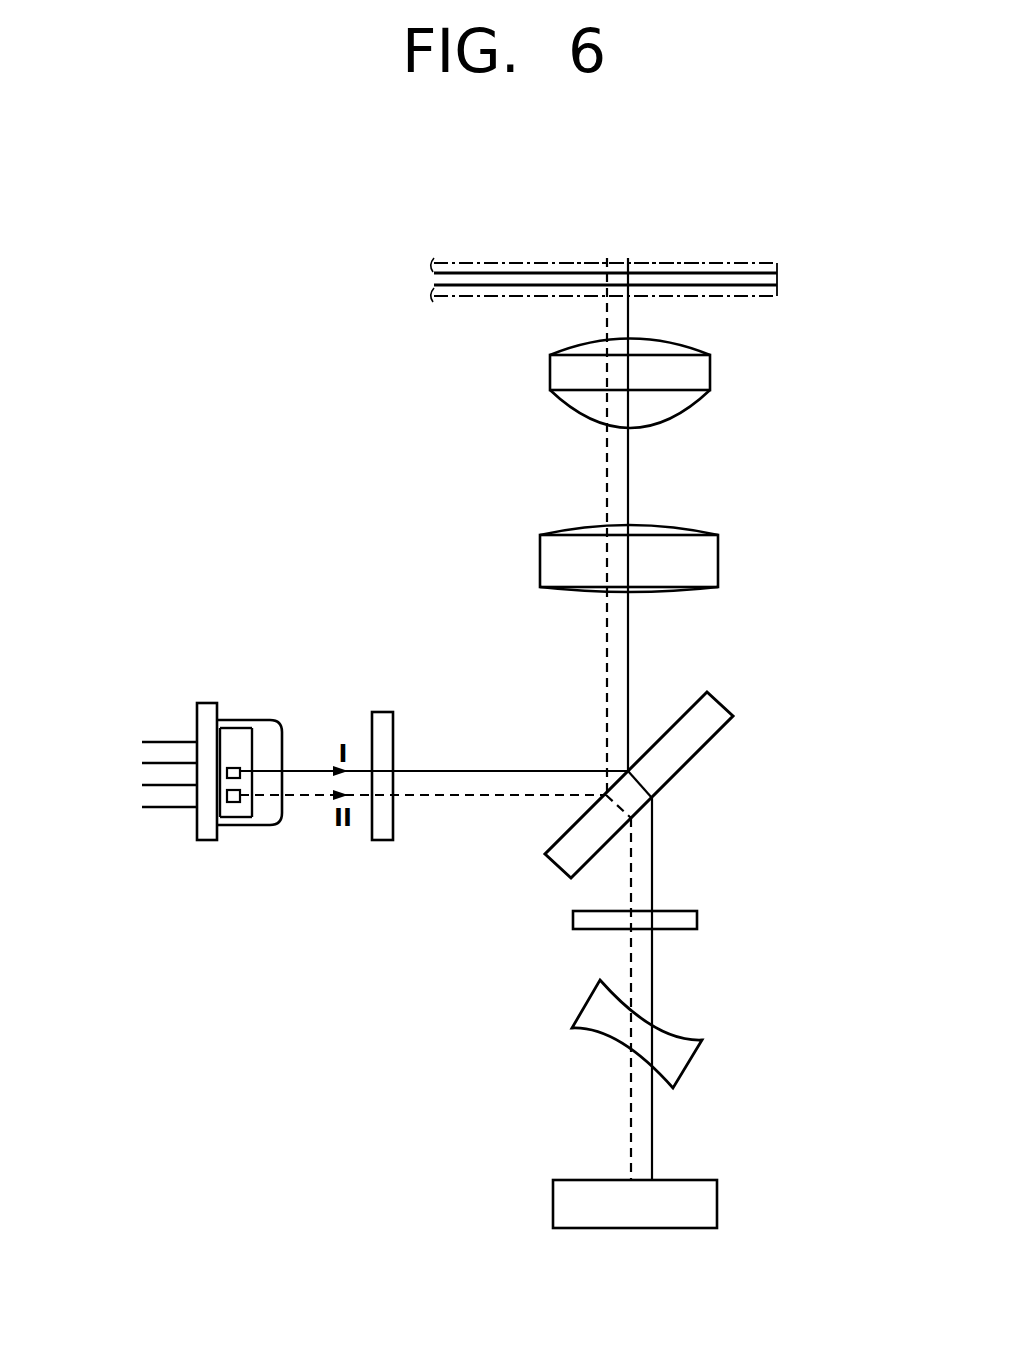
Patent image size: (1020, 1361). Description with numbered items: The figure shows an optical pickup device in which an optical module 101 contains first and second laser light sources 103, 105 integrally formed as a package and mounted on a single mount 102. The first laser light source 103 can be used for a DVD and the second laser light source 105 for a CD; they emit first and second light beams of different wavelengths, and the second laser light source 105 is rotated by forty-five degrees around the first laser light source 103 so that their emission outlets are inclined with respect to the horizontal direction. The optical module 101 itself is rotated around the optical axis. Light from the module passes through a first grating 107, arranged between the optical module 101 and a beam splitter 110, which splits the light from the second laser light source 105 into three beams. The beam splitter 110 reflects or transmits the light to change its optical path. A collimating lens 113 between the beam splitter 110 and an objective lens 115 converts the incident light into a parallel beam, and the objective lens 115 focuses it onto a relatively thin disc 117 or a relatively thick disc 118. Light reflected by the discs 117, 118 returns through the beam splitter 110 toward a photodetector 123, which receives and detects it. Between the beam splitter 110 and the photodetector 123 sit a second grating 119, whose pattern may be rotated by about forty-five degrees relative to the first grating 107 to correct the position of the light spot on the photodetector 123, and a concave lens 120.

The optical module 101 is at (162, 700).
The mount 102 is at (220, 825).
The first laser light source 103 is at (240, 768).
The second laser light source 105 is at (240, 802).
The first grating 107 is at (383, 720).
The beam splitter 110 is at (690, 755).
The collimating lens 113 is at (718, 562).
The objective lens 115 is at (710, 373).
The thin disc 117 is at (777, 280).
The thick disc 118 is at (635, 263).
The second grating 119 is at (697, 920).
The concave lens 120 is at (677, 1040).
The photodetector 123 is at (667, 1222).